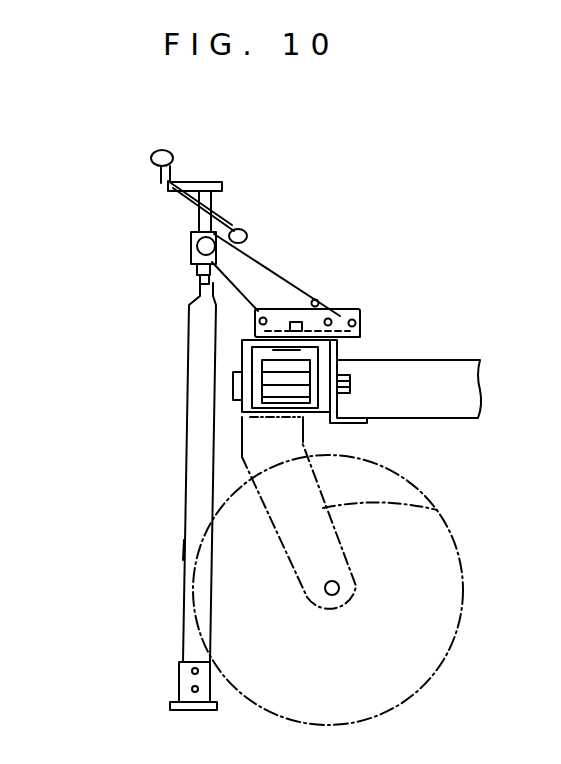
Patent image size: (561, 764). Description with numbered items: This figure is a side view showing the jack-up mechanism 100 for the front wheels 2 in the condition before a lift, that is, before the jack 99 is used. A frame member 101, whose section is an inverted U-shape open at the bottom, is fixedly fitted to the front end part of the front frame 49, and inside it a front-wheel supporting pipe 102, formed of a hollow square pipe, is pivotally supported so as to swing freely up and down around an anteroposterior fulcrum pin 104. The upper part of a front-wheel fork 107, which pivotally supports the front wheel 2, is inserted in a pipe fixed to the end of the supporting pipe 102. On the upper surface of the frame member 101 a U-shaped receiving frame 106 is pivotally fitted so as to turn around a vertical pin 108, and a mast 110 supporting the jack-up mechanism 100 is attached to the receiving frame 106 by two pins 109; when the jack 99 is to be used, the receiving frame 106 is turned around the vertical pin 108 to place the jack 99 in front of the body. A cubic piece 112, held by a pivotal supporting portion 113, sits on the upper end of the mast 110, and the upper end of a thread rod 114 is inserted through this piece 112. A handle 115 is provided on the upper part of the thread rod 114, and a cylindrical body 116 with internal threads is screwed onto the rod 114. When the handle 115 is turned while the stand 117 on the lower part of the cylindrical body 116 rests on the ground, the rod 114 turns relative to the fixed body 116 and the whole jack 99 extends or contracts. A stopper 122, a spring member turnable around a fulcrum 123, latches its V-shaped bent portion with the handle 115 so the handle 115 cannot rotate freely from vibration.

The front wheel 2 is at (437, 676).
The front frame 49 is at (437, 407).
The jack 99 is at (187, 535).
The jack-up mechanism 100 is at (152, 355).
The frame member 101 is at (357, 343).
The front-wheel supporting pipe 102 is at (242, 416).
The anteroposterior fulcrum pin 104 is at (352, 380).
The receiving frame 106 is at (358, 313).
The front-wheel fork 107 is at (437, 510).
The vertical pin 108 is at (318, 302).
The pin 109 is at (266, 316).
The mast 110 is at (256, 262).
The cubic piece 112 is at (191, 237).
The pivotal supporting portion 113 is at (191, 250).
The thread rod 114 is at (197, 279).
The handle 115 is at (172, 156).
The cylindrical body 116 is at (187, 415).
The stand 117 is at (182, 674).
The stopper 122 is at (229, 226).
The fulcrum 123 is at (244, 231).